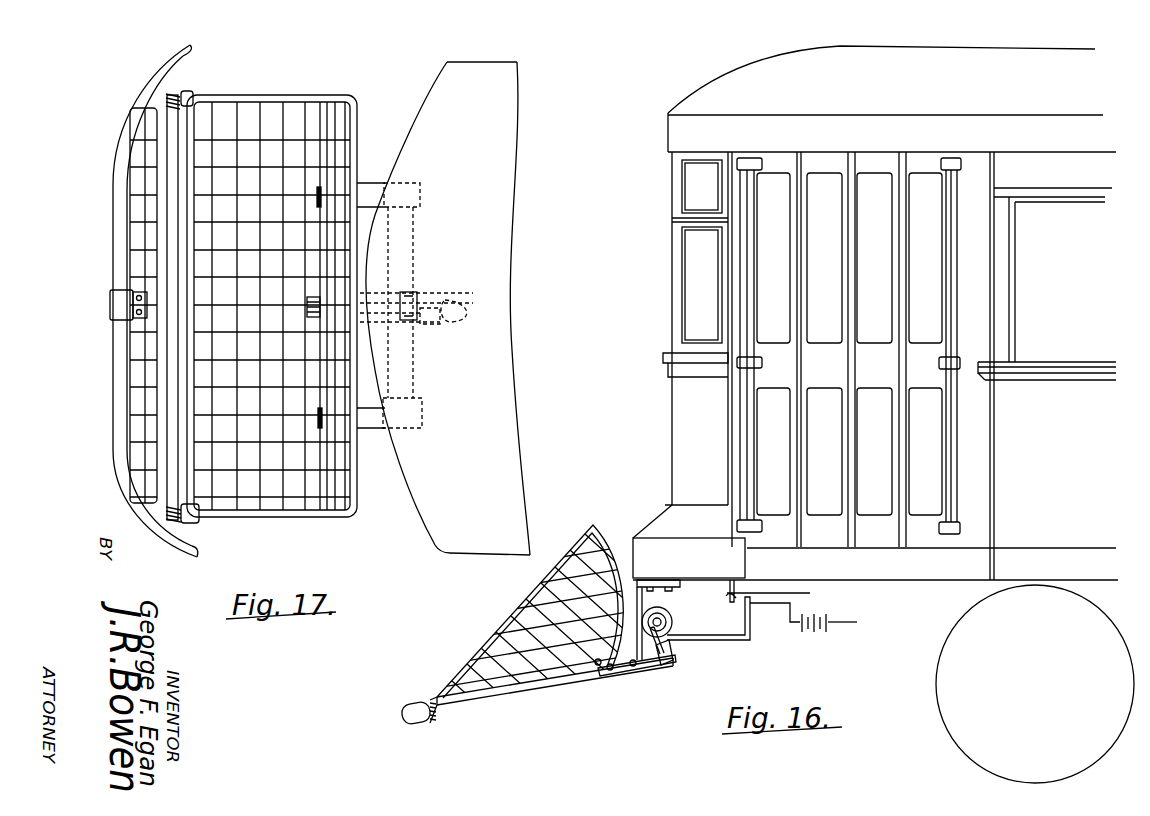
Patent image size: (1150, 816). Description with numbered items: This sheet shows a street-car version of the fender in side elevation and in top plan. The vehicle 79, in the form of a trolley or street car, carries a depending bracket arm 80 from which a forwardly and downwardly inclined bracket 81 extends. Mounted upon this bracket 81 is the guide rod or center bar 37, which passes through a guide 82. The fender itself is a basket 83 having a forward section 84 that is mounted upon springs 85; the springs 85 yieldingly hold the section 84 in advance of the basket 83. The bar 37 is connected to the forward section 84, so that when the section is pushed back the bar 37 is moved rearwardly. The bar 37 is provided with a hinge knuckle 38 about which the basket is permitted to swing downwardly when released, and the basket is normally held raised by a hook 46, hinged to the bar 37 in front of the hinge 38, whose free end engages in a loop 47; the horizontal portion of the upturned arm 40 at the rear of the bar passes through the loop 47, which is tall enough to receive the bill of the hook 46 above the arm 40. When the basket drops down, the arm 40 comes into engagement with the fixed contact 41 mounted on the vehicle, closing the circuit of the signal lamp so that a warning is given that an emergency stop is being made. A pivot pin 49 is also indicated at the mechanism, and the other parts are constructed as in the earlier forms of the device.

In FIG. 17, the center bar 37 is at (170, 308).
In FIG. 16, the center bar 37 is at (517, 690).
In FIG. 17, the hinge knuckle 38 is at (362, 322).
In FIG. 17, the upturned arm 40 is at (452, 308).
In FIG. 16, the upturned arm 40 is at (747, 630).
In FIG. 16, the fixed contact 41 is at (715, 592).
In FIG. 17, the hook 46 is at (417, 307).
In FIG. 16, the hook 46 is at (663, 635).
In FIG. 16, the loop 47 is at (667, 670).
In FIG. 17, the pivot pin 49 is at (427, 318).
In FIG. 16, the pivot pin 49 is at (672, 620).
In FIG. 17, the vehicle 79 is at (493, 233).
In FIG. 16, the vehicle 79 is at (883, 414).
In FIG. 16, the depending bracket arm 80 is at (646, 603).
In FIG. 17, the inclined bracket 81 is at (370, 194).
In FIG. 16, the inclined bracket 81 is at (630, 672).
In FIG. 17, the guide 82 is at (403, 293).
In FIG. 16, the guide 82 is at (672, 662).
In FIG. 17, the basket 83 is at (272, 485).
In FIG. 16, the basket 83 is at (537, 620).
In FIG. 17, the forward section 84 is at (115, 183).
In FIG. 16, the forward section 84 is at (430, 700).
In FIG. 17, the springs 85 is at (175, 87).
In FIG. 16, the springs 85 is at (430, 713).